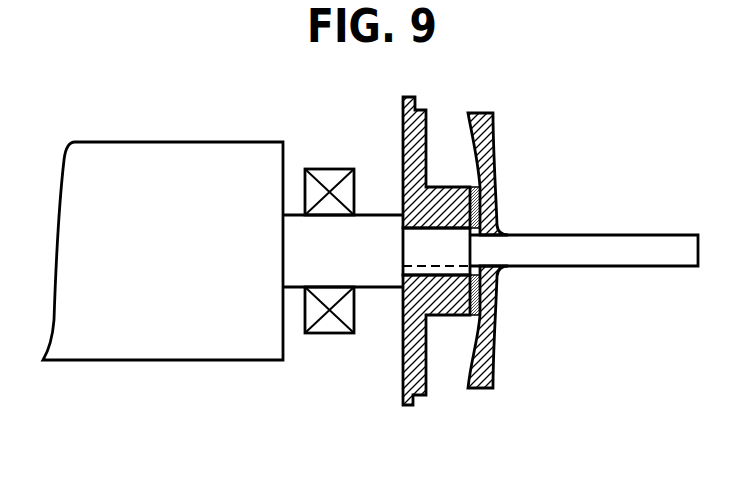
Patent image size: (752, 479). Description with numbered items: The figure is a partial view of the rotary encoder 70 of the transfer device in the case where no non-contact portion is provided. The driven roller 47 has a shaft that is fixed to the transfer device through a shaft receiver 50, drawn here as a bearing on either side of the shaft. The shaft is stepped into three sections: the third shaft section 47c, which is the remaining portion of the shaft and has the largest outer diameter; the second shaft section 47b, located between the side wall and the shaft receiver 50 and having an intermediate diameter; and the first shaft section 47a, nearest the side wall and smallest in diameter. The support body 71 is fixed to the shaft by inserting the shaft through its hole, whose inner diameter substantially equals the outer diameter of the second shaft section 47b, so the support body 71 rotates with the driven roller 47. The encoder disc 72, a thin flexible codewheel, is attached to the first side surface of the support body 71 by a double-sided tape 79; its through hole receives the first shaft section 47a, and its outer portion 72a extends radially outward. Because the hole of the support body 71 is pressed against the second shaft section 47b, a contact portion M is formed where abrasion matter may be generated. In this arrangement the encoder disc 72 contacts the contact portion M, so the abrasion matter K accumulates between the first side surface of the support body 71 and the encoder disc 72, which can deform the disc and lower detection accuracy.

The driven roller 47 is at (190, 155).
The first shaft section 47a is at (590, 246).
The second shaft section 47b is at (422, 238).
The third shaft section 47c is at (293, 226).
The shaft receiver 50 is at (325, 336).
The rotary encoder 70 is at (608, 113).
The support body 71 is at (403, 383).
The encoder disc 72 is at (497, 356).
The disk peripheral portion 72a is at (493, 113).
The double-sided tape 79 is at (477, 187).
The contact portion M is at (447, 290).
The abrasion matter K is at (490, 286).